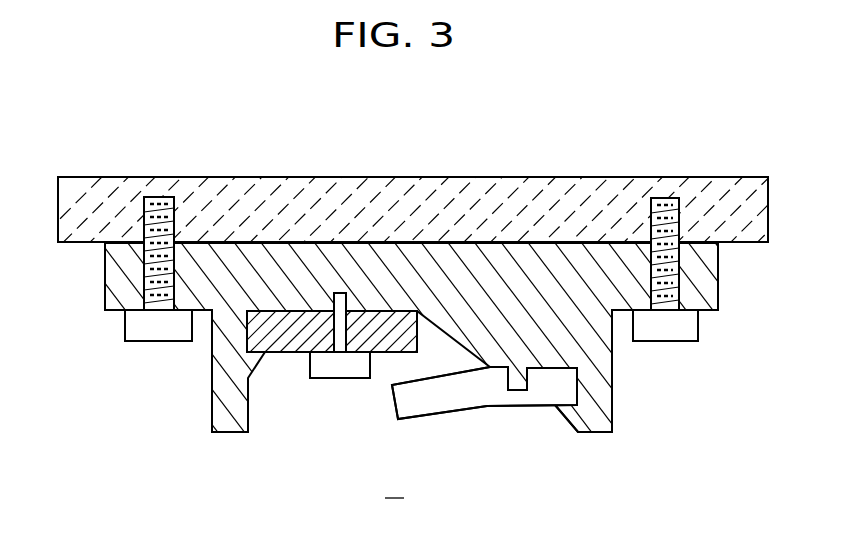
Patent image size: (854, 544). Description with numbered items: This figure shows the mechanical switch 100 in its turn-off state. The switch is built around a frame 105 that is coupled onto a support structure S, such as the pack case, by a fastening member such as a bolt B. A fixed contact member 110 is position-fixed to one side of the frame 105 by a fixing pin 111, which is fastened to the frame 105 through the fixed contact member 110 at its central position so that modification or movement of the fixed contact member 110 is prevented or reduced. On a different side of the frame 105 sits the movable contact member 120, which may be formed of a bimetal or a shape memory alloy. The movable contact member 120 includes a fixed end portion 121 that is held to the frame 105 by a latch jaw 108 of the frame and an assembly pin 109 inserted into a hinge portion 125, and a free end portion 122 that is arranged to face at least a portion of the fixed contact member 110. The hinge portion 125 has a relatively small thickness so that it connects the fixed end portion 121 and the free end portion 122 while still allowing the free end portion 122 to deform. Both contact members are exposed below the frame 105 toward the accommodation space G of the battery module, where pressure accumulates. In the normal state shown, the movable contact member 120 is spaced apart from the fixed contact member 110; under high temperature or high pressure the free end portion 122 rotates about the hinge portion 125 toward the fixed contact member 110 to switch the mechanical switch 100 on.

The mechanical switch 100 is at (427, 347).
The support structure S is at (757, 208).
The frame 105 is at (712, 278).
The bolt B is at (673, 293).
The latch jaw 108 is at (605, 422).
The assembly pin 109 is at (520, 382).
The fixed contact member 110 is at (286, 342).
The fixing pin 111 is at (351, 378).
The movable contact member 120 is at (491, 447).
The fixed end portion 121 is at (538, 423).
The free end portion 122 is at (443, 408).
The hinge portion 125 is at (513, 395).
The accommodation space G is at (395, 487).